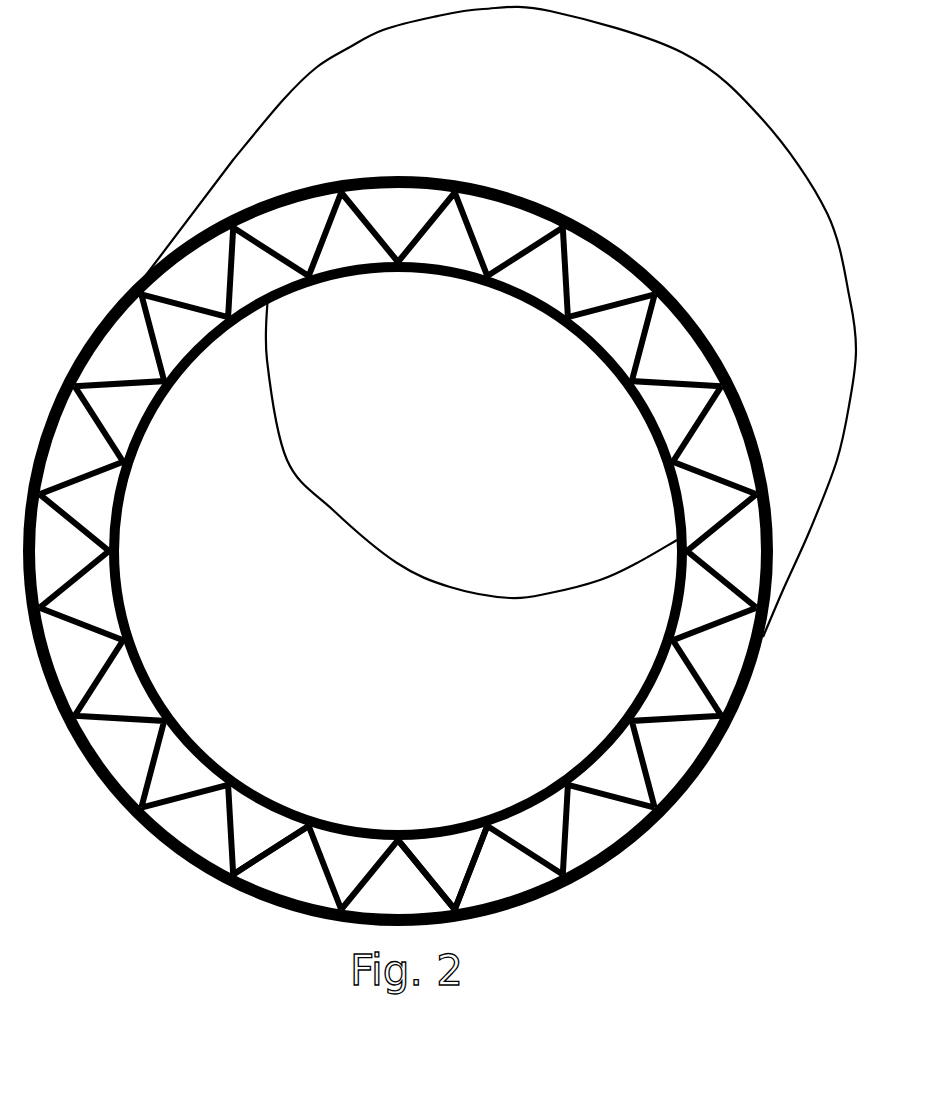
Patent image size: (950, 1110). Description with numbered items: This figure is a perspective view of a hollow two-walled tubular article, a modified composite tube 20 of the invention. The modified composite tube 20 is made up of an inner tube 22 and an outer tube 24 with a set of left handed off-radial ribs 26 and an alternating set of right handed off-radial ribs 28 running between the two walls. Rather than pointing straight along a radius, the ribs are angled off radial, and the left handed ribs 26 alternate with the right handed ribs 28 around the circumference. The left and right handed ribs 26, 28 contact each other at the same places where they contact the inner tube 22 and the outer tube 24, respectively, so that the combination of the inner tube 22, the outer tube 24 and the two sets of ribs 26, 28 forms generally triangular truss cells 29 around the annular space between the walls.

The modified composite tube 20 is at (398, 551).
The inner tube 22 is at (190, 367).
The outer tube 24 is at (610, 150).
The left handed off-radial ribs 26 is at (570, 273).
The right handed off-radial ribs 28 is at (282, 842).
The triangular truss cells 29 is at (450, 860).